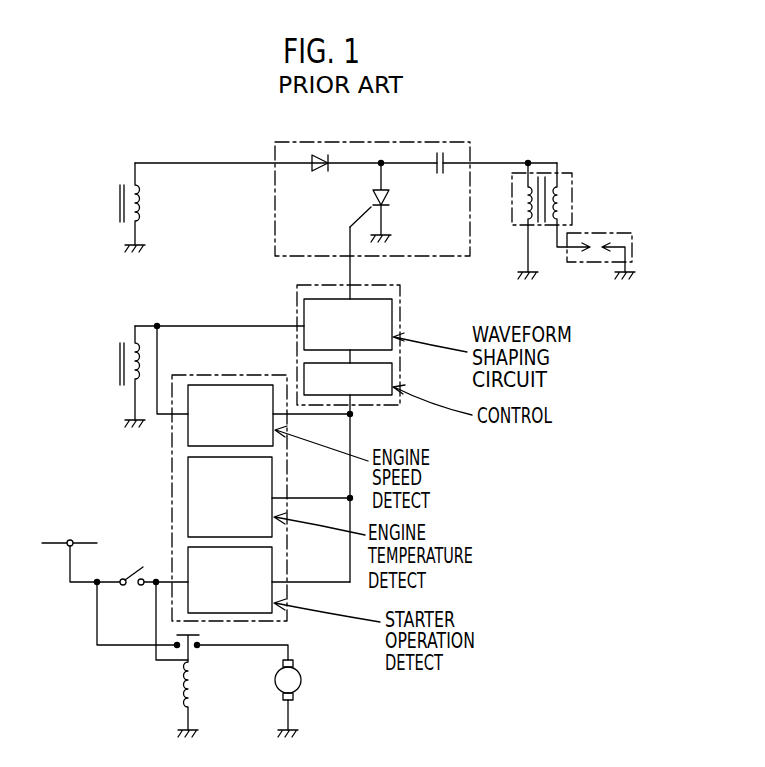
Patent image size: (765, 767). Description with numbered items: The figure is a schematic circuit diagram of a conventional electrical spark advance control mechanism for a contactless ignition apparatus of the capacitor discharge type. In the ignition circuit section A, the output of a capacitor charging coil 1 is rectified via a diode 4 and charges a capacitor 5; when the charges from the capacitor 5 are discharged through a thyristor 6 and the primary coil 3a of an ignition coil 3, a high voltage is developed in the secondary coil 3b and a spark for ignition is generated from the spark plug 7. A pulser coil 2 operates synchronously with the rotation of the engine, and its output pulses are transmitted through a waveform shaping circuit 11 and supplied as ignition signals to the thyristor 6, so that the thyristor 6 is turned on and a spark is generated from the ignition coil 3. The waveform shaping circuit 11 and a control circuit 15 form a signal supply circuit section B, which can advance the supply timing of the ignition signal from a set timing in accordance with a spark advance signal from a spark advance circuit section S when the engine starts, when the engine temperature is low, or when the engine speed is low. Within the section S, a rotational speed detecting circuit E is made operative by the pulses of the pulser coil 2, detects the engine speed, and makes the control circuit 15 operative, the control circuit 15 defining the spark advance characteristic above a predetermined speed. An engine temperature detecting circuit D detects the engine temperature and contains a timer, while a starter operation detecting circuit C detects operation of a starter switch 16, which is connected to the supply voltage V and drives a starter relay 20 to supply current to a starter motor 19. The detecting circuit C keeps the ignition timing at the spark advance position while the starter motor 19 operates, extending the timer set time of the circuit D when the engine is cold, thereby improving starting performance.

The capacitor charging coil 1 is at (118, 197).
The pulser coil 2 is at (118, 363).
The ignition coil 3 is at (553, 206).
The primary coil 3a is at (526, 208).
The secondary coil 3b is at (560, 211).
The diode 4 is at (320, 174).
The capacitor 5 is at (436, 153).
The thyristor 6 is at (389, 199).
The spark plug 7 is at (592, 262).
The waveform shaping circuit 11 is at (392, 322).
The control circuit 15 is at (392, 373).
The starter switch 16 is at (137, 577).
The starter motor 19 is at (301, 680).
The starter relay 20 is at (198, 684).
The ignition circuit section A is at (275, 141).
The signal supply circuit section B is at (297, 286).
The starter operation detecting circuit C is at (272, 558).
The engine temperature detecting circuit D is at (272, 478).
The rotational speed detecting circuit E is at (237, 385).
The spark advance circuit section S is at (172, 489).
The power supply voltage V is at (61, 543).